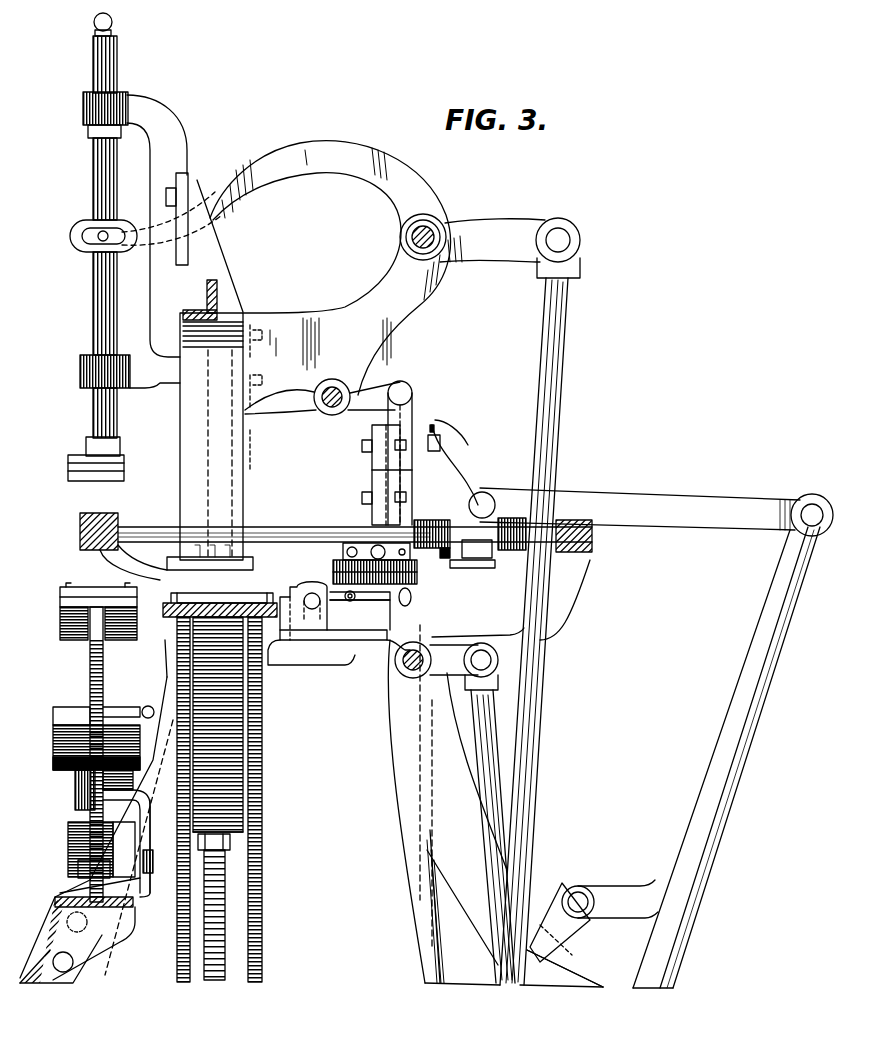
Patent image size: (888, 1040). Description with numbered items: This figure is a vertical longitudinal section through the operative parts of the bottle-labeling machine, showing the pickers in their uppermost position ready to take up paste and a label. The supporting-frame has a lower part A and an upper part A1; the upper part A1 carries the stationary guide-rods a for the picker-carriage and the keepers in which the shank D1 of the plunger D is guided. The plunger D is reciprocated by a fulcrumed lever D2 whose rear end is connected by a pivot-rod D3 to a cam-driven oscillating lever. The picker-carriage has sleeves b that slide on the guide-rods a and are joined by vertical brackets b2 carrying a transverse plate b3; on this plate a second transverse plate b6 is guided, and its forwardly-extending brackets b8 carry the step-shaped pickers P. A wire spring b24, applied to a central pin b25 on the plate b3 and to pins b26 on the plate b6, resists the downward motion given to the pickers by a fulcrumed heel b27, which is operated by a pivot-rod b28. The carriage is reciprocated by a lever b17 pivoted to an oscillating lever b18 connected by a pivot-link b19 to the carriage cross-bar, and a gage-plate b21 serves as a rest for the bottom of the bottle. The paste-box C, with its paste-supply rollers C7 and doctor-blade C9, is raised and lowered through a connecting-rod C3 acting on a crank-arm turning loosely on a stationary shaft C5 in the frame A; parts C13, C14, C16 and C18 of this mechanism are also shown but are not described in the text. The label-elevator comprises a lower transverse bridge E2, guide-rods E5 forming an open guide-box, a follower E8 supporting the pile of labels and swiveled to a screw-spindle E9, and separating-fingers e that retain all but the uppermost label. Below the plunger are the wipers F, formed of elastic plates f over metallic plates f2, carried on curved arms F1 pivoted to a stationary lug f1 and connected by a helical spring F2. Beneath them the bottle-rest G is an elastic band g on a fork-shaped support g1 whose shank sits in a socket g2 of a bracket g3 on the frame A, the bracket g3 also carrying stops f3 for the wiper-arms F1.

The plunger shank D1 is at (93, 172).
The plunger D is at (68, 466).
The fulcrumed lever D2 is at (395, 268).
The pivot-rod D3 is at (545, 450).
The upper part of supporting-frame A1 is at (259, 327).
The supporting-frame A is at (560, 620).
The guide-rods a is at (150, 530).
The sleeves b is at (440, 530).
The vertical brackets b2 is at (425, 480).
The transverse plate b3 is at (440, 448).
The transverse plate b6 is at (412, 476).
The forwardly-extending brackets b8 is at (414, 520).
The lever b17 is at (575, 940).
The oscillating lever b18 is at (710, 800).
The pivot-link b19 is at (648, 512).
The gage-plate b21 is at (452, 556).
The wire spring b24 is at (420, 430).
The central pin b25 is at (470, 445).
The pins b26 is at (432, 424).
The fulcrumed heel b27 is at (283, 410).
The pivot-rod b28 is at (372, 443).
The pickers P is at (412, 570).
The paste-box C is at (370, 615).
The connecting-rod C3 is at (495, 832).
The stationary shaft C5 is at (405, 668).
The paste-supply rollers C7 is at (333, 572).
The doctor-blade C9 is at (352, 601).
The link C13 is at (495, 935).
The arm C14 is at (445, 672).
The bracket C16 is at (325, 630).
The thumb nut C18 is at (411, 600).
The separating-fingers e is at (175, 598).
The lower transverse bridge E2 is at (200, 617).
The guide-rods E5 is at (262, 745).
The follower E8 is at (243, 836).
The screw-spindle E9 is at (217, 978).
The elastic plates f is at (60, 590).
The wipers F is at (62, 608).
The metallic plates f2 is at (62, 636).
The curved arms F1 is at (90, 688).
The helical spring F2 is at (146, 705).
The elastic band g is at (55, 722).
The bottle-rest G is at (75, 720).
The fork-shaped support g1 is at (80, 782).
The socket g2 is at (85, 792).
The bracket g3 is at (142, 808).
The stops f3 is at (80, 822).
The stationary lug f1 is at (78, 874).